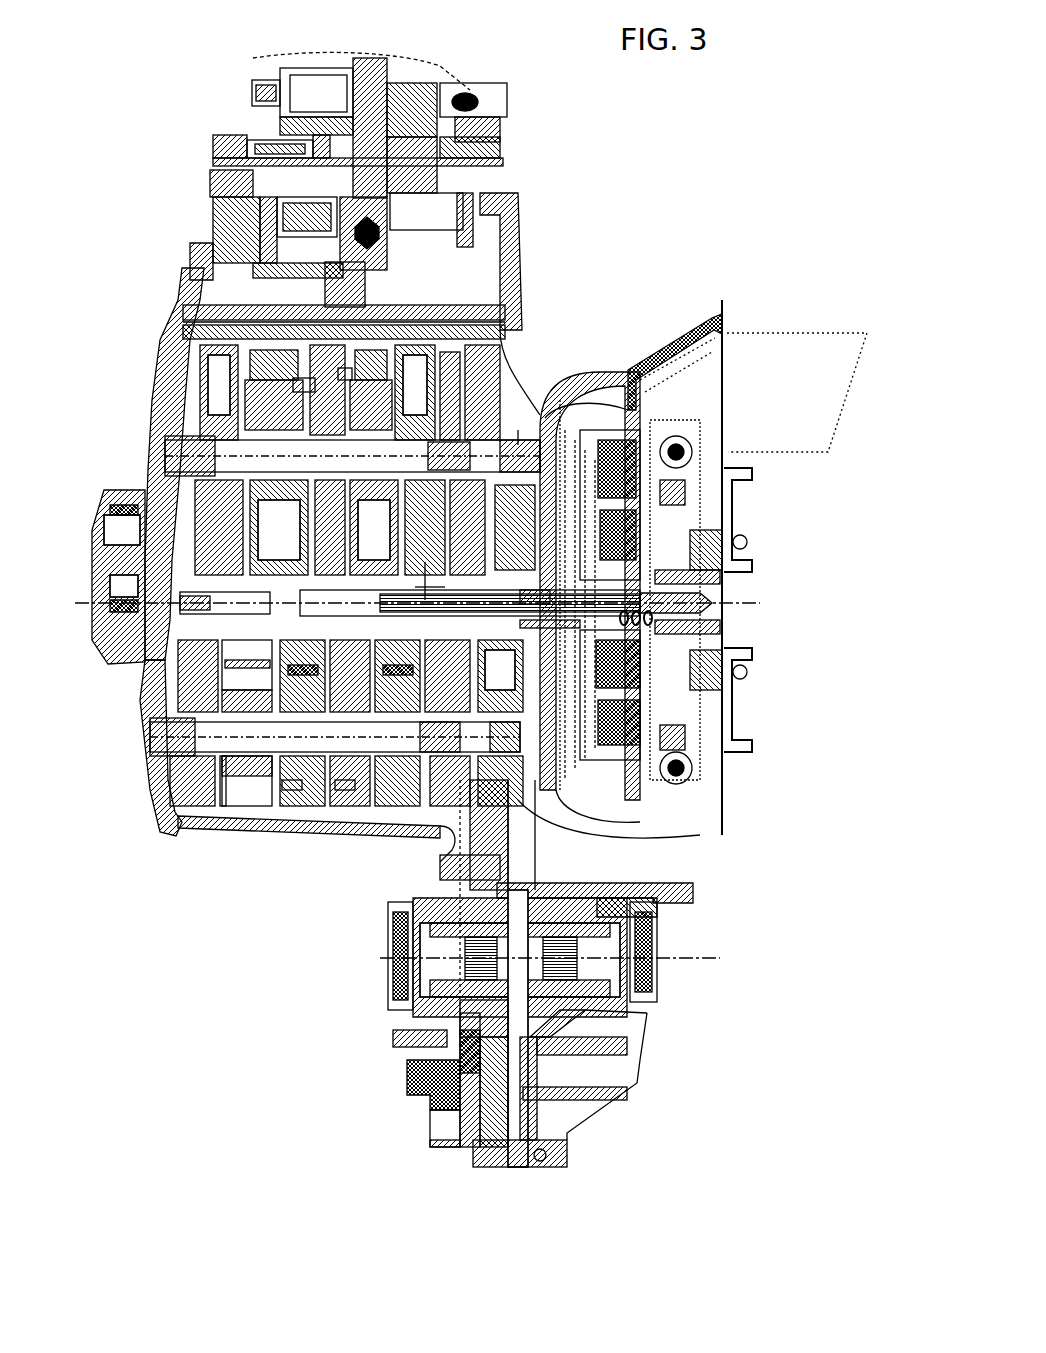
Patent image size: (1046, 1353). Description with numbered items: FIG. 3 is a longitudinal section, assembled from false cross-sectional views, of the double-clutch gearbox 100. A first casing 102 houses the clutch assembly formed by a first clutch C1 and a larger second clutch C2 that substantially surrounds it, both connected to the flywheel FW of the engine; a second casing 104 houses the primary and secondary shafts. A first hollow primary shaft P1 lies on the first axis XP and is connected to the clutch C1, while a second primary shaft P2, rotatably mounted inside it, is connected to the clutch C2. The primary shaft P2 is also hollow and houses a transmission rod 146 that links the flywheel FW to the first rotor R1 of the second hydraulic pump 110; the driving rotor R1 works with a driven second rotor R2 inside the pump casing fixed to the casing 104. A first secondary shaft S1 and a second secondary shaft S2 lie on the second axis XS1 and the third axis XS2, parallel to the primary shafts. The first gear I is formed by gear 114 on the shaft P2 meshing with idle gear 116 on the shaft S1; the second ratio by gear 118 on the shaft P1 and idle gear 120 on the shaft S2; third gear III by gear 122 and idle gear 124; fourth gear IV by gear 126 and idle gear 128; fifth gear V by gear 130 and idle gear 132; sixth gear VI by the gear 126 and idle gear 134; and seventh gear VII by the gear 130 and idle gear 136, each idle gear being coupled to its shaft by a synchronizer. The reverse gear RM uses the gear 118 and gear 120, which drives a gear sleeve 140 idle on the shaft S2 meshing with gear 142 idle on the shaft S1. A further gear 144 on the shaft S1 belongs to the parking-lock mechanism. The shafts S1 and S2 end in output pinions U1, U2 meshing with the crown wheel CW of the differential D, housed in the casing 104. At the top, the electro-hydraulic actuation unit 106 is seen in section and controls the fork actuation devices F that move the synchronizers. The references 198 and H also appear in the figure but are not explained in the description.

The gearbox 100 is at (685, 258).
The first casing 102 is at (518, 240).
The second casing 104 is at (152, 392).
The electro-hydraulic actuation unit 106 is at (503, 164).
The second hydraulic pump 110 is at (86, 578).
The gear 114 is at (222, 647).
The gear 116 is at (190, 530).
The gear 118 is at (505, 690).
The gear 120 is at (442, 818).
The gear 122 is at (192, 668).
The gear 124 is at (195, 822).
The gear 126 is at (350, 578).
The gear 128 is at (335, 392).
The gear 130 is at (300, 575).
The gear 132 is at (268, 395).
The gear 134 is at (315, 795).
The gear 136 is at (305, 795).
The gear sleeve 140 is at (400, 870).
The gear 142 is at (452, 372).
The gear 144 is at (462, 414).
The transmission rod 146 is at (318, 602).
The clutch housing 198 is at (565, 402).
The fork actuation devices F is at (336, 302).
The first secondary shaft S1 is at (205, 445).
The second secondary shaft S2 is at (178, 745).
The output pinion U1 is at (495, 410).
The output pinion U2 is at (535, 820).
The second axis XS1 is at (520, 430).
The third axis XS2 is at (245, 765).
The first axis XP is at (740, 600).
The reverse gear ratio RM is at (420, 545).
The first rotor R1 is at (116, 650).
The second rotor R2 is at (118, 512).
The first hollow primary shaft P1 is at (432, 630).
The second primary shaft P2 is at (262, 642).
The first clutch C1 is at (640, 735).
The second clutch C2 is at (610, 782).
The differential D is at (570, 1030).
The crown wheel CW is at (457, 1127).
The flywheel FW is at (797, 392).
The section H is at (430, 581).
The first forward gear ratio I is at (237, 676).
The third forward gear ratio III is at (236, 787).
The fourth forward gear ratio IV is at (334, 365).
The fifth forward gear ratio V is at (304, 376).
The sixth forward gear ratio VI is at (341, 799).
The seventh forward gear ratio VII is at (291, 799).